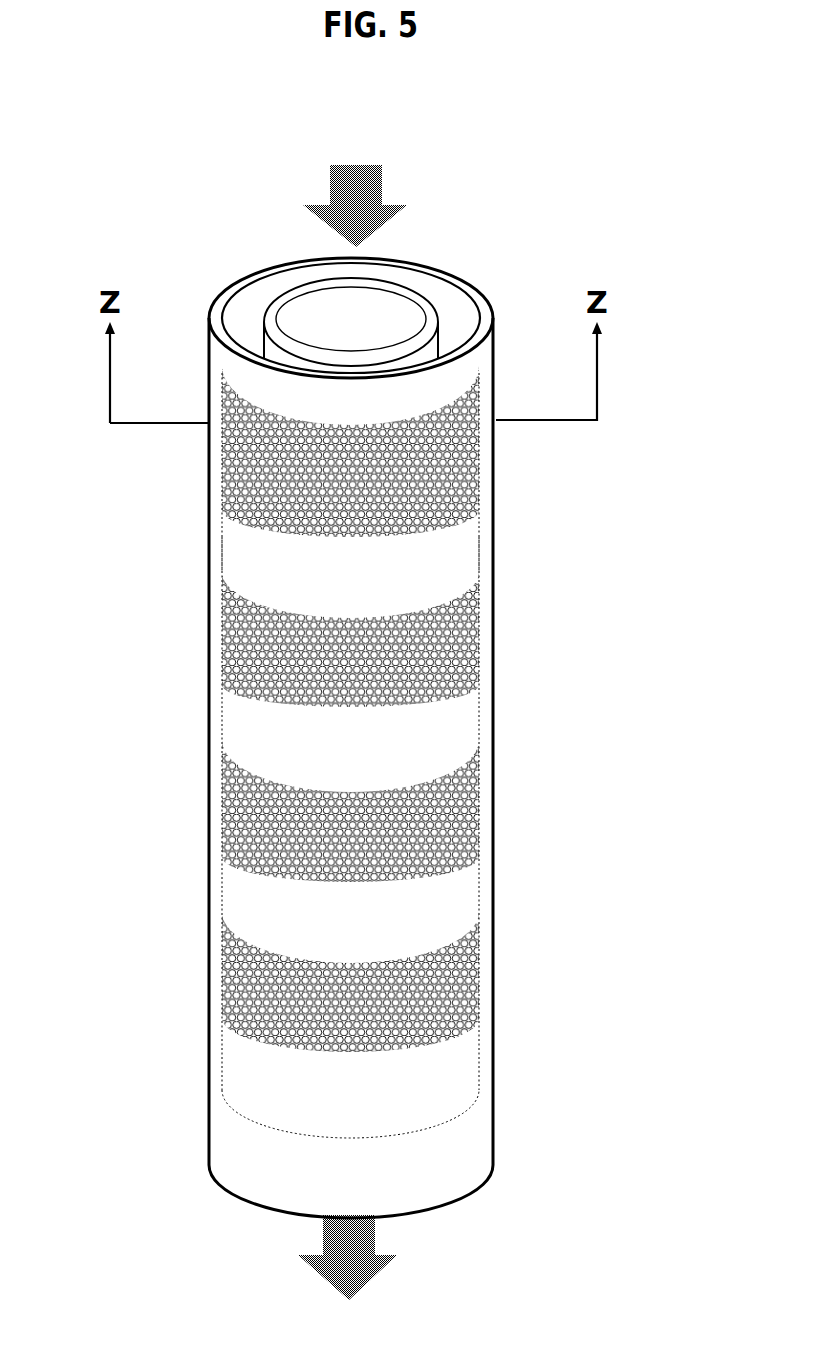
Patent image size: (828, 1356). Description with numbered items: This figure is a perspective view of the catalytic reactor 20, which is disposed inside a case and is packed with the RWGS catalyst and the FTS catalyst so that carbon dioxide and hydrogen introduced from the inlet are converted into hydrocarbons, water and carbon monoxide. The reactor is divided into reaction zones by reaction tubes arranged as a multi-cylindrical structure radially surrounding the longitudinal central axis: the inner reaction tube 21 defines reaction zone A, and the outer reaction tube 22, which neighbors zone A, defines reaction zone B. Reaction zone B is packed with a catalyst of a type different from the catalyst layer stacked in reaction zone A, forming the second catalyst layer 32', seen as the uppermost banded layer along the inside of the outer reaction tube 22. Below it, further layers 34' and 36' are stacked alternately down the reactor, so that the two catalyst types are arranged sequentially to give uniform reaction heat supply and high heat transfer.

The catalytic reactor 20 is at (536, 482).
The inner reaction tube 21 is at (403, 293).
The outer reaction tube 22 is at (485, 297).
The second catalyst layer 32' is at (270, 451).
The spacing between mesh bands 34' is at (447, 562).
The second mesh band 36' is at (447, 639).